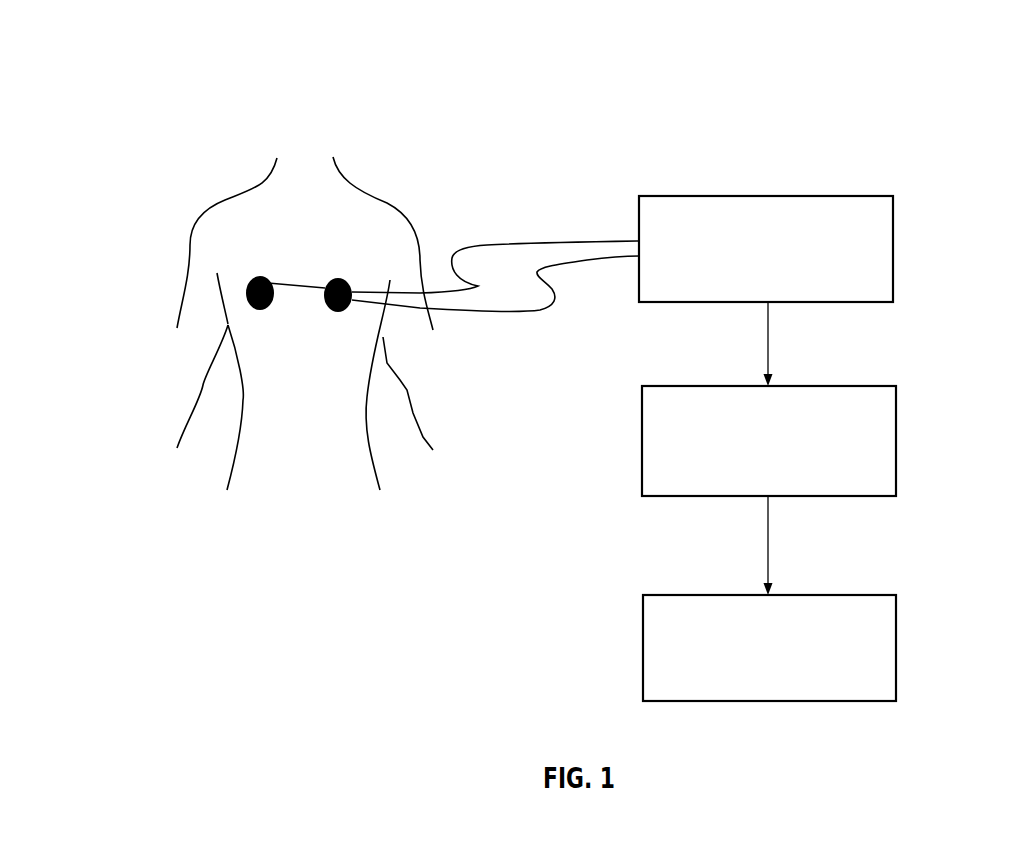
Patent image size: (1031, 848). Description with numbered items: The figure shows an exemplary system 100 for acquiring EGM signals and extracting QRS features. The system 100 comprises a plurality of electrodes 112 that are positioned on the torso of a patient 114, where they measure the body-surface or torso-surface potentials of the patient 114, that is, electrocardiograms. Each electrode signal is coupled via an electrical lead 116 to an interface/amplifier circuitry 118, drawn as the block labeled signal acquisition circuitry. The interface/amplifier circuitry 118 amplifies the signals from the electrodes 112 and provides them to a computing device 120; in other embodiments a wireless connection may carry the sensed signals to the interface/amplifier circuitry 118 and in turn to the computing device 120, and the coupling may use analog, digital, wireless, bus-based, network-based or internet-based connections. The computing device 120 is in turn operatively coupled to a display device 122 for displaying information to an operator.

The system 100 is at (128, 242).
The electrodes 112 is at (351, 253).
The patient 114 is at (355, 188).
The electrical lead 116 is at (508, 238).
The interface/amplifier circuitry 118 is at (893, 261).
The computing device 120 is at (897, 447).
The display device 122 is at (896, 640).